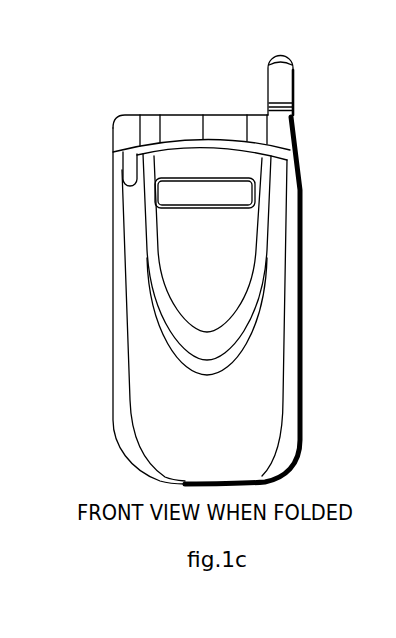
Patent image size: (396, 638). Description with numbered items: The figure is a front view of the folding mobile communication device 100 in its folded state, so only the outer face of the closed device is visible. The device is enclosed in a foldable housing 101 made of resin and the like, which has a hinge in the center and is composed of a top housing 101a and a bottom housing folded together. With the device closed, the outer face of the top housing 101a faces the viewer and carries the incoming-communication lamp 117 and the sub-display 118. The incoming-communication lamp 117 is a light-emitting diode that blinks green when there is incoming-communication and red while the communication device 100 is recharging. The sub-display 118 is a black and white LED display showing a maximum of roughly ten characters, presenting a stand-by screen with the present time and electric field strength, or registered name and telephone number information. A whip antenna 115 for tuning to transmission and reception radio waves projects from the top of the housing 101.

The communication device 100 is at (157, 116).
The housing 101 is at (107, 434).
The top housing 101a is at (286, 379).
The antenna 115 is at (270, 78).
The incoming-communication lamp 117 is at (108, 164).
The sub-display 118 is at (164, 198).